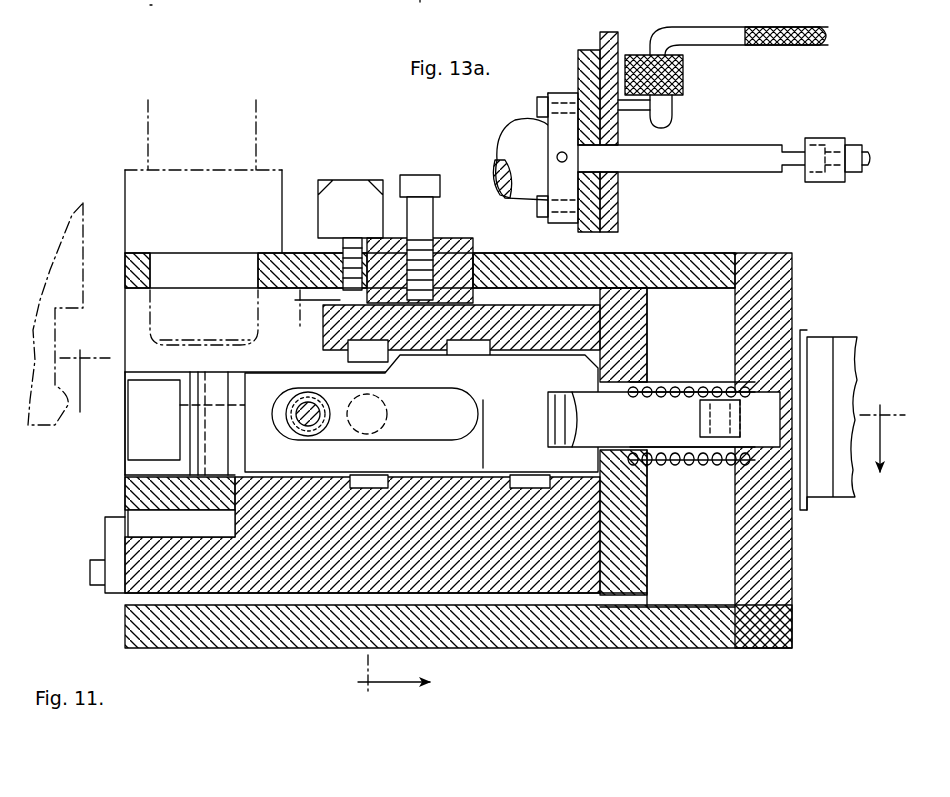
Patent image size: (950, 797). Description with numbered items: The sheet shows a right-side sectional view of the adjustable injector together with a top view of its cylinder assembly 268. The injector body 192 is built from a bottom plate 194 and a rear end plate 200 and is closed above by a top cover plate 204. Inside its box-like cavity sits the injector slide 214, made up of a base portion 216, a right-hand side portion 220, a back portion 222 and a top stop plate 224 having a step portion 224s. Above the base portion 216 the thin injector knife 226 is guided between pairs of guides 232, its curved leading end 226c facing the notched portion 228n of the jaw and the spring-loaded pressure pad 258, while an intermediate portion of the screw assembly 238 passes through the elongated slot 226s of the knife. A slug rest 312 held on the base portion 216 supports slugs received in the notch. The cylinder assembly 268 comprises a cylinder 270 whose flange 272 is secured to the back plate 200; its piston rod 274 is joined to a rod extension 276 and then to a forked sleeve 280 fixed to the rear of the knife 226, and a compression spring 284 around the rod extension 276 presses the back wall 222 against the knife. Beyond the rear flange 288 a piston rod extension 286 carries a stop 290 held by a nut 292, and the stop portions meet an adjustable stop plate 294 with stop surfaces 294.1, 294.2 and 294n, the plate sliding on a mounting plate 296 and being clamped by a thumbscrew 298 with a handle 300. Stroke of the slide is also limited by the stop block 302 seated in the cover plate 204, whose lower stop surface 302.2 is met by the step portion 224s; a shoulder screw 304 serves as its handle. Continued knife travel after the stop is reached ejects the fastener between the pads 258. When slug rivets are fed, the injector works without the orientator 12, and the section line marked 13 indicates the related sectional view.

In FIG. 11, the injector body 192 is at (150, 5).
In FIG. 11, the bottom plate 194 is at (190, 648).
In FIG. 11, the rear end plate 200 is at (795, 578).
In FIG. 11, the top cover plate 204 is at (668, 295).
In FIG. 11, the injector slide 214 is at (665, 347).
In FIG. 11, the base portion 216 is at (140, 593).
In FIG. 11, the right-hand side portion 220 is at (420, 0).
In FIG. 11, the back portion 222 is at (635, 557).
In FIG. 11, the stop plate 224 is at (473, 275).
In FIG. 11, the step portion 224s is at (515, 270).
In FIG. 11, the injector knife 226 is at (265, 472).
In FIG. 11, the curved leading end 226c is at (257, 423).
In FIG. 11, the elongated slot 226s is at (438, 440).
In FIG. 11, the notched portion 228n is at (232, 345).
In FIG. 11, the guides 232 is at (348, 350).
In FIG. 11, the screw assembly 238 is at (302, 0).
In FIG. 11, the pressure pad 258 is at (125, 443).
In FIG. 13A, the cylinder assembly 268 is at (525, 100).
In FIG. 11, the cylinder 270 is at (828, 510).
In FIG. 13A, the cylinder 270 is at (512, 125).
In FIG. 11, the flange 272 is at (808, 330).
In FIG. 11, the piston rod 274 is at (790, 382).
In FIG. 11, the rod extension 276 is at (700, 420).
In FIG. 11, the forked sleeve 280 is at (664, 419).
In FIG. 11, the compression spring 284 is at (668, 462).
In FIG. 13A, the piston rod extension 286 is at (720, 172).
In FIG. 13A, the rear flange 288 is at (550, 135).
In FIG. 13A, the stop 290 is at (840, 138).
In FIG. 13A, the nut 292 is at (850, 182).
In FIG. 13A, the adjustable stop plate 294 is at (622, 32).
In FIG. 13A, the stop surface 294n is at (650, 30).
In FIG. 13A, the stop surface 294.1 is at (672, 128).
In FIG. 13A, the stop surface 294.2 is at (670, 105).
In FIG. 13A, the mounting plate 296 is at (582, 50).
In FIG. 13A, the thumbscrew 298 is at (683, 70).
In FIG. 13A, the handle 300 is at (782, 45).
In FIG. 11, the stop block 302 is at (445, 240).
In FIG. 11, the stop surface 302.2 is at (461, 327).
In FIG. 11, the shoulder screw 304 is at (405, 180).
In FIG. 11, the slug rest 312 is at (125, 492).
In FIG. 11, the orientator 12 is at (349, 494).
In FIG. 11, the section line 13 is at (466, 337).